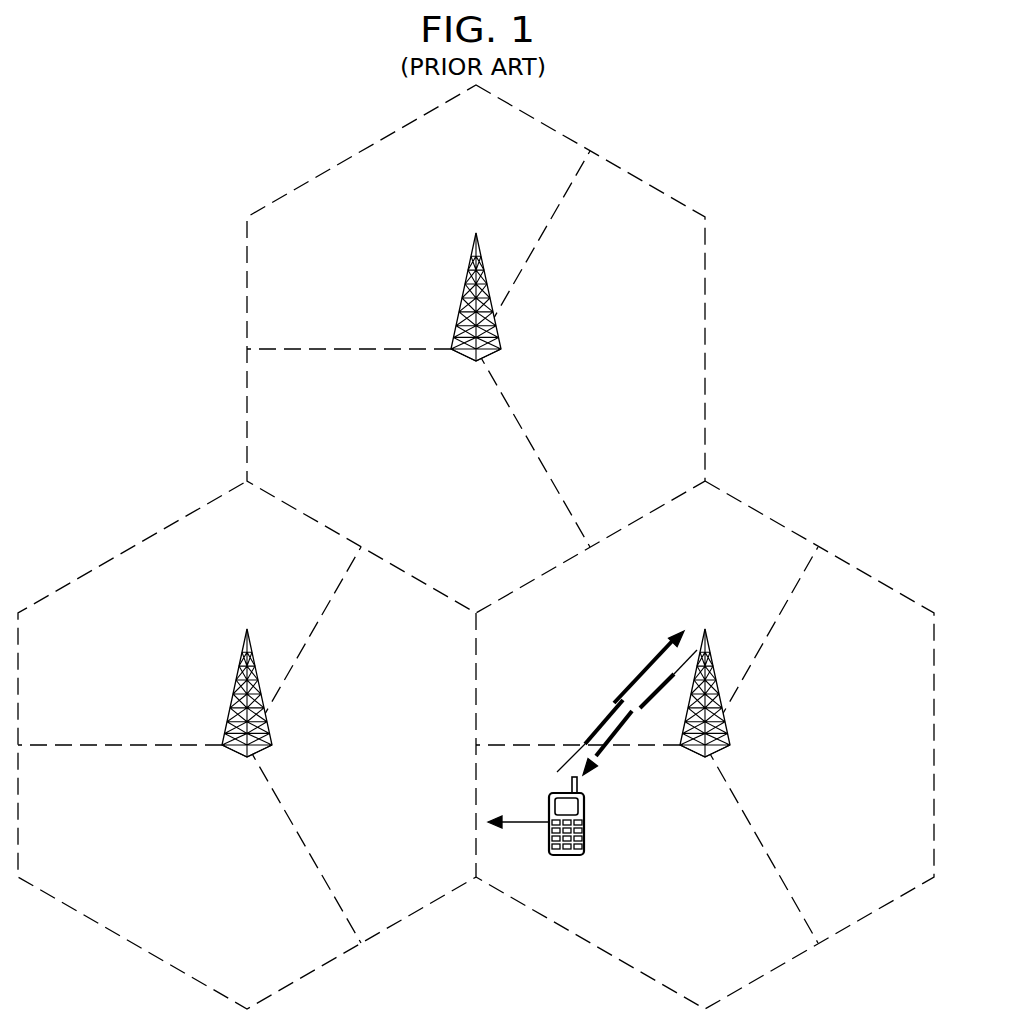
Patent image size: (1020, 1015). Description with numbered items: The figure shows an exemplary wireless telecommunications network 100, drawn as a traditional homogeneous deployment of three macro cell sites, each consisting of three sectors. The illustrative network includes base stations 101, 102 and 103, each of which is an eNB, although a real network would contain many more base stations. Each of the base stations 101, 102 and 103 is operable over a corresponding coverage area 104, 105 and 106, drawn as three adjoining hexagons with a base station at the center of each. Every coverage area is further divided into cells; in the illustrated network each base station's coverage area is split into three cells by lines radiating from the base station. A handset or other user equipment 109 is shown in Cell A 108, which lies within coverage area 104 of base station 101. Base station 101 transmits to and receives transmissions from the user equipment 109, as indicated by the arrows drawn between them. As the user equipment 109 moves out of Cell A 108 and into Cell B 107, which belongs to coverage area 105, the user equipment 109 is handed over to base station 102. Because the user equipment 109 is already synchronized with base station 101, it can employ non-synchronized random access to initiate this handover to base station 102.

The wireless telecommunications network 100 is at (259, 102).
The base station 101 is at (730, 732).
The base station 102 is at (232, 692).
The base station 103 is at (458, 302).
The coverage area 104 is at (782, 963).
The coverage area 105 is at (143, 948).
The coverage area 106 is at (631, 171).
The Cell B 107 is at (405, 778).
The Cell A 108 is at (727, 585).
The user equipment 109 is at (576, 856).